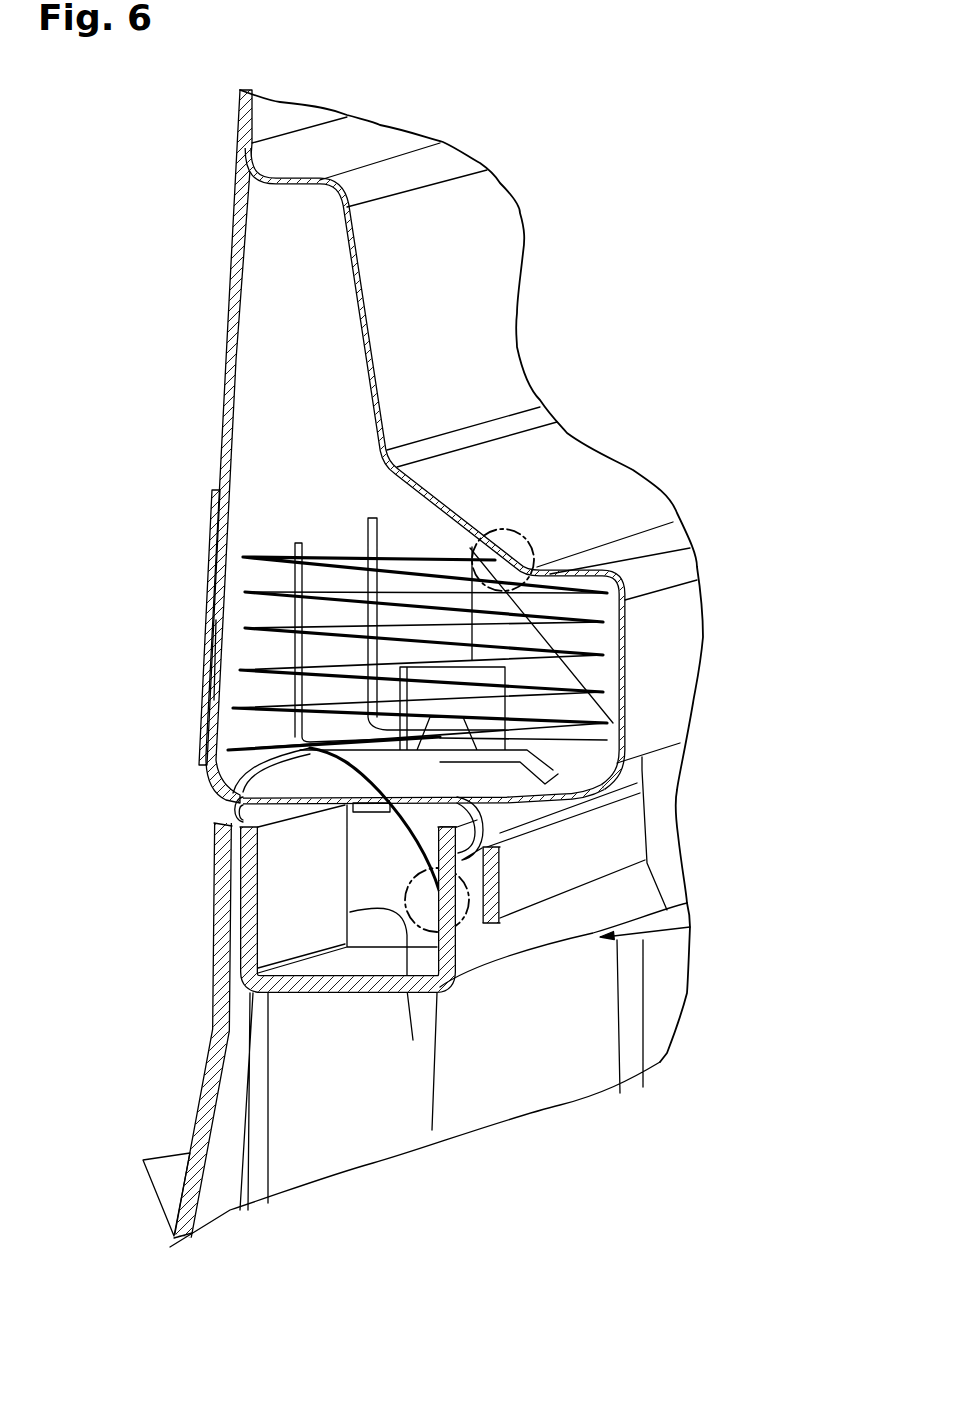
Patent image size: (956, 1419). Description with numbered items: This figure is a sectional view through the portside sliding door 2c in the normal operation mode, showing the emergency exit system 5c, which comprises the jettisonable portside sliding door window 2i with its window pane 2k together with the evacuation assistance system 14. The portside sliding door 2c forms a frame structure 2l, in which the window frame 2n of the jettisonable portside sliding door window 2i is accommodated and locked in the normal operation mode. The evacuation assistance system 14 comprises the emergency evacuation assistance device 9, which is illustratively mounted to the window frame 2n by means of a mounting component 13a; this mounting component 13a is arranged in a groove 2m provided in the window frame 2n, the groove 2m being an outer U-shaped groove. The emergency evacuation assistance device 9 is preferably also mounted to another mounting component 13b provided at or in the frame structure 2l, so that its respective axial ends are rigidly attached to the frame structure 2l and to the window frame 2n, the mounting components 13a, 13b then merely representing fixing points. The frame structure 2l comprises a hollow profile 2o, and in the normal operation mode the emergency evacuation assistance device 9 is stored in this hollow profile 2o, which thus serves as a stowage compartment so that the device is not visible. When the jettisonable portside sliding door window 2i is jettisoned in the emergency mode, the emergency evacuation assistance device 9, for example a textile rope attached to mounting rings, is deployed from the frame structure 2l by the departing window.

The portside sliding door 2c is at (178, 155).
The window frame 2n is at (233, 826).
The hollow profile 2o is at (222, 535).
The frame structure 2l is at (211, 671).
The evacuation assistance system 14 is at (248, 585).
The emergency evacuation assistance device 9 is at (413, 1040).
The mounting component 13b is at (487, 570).
The mounting component 13a is at (403, 907).
The emergency exit system 5c is at (185, 893).
The groove 2m is at (310, 907).
The jettisonable portside sliding door window 2i is at (220, 1195).
The window pane 2k is at (228, 1152).